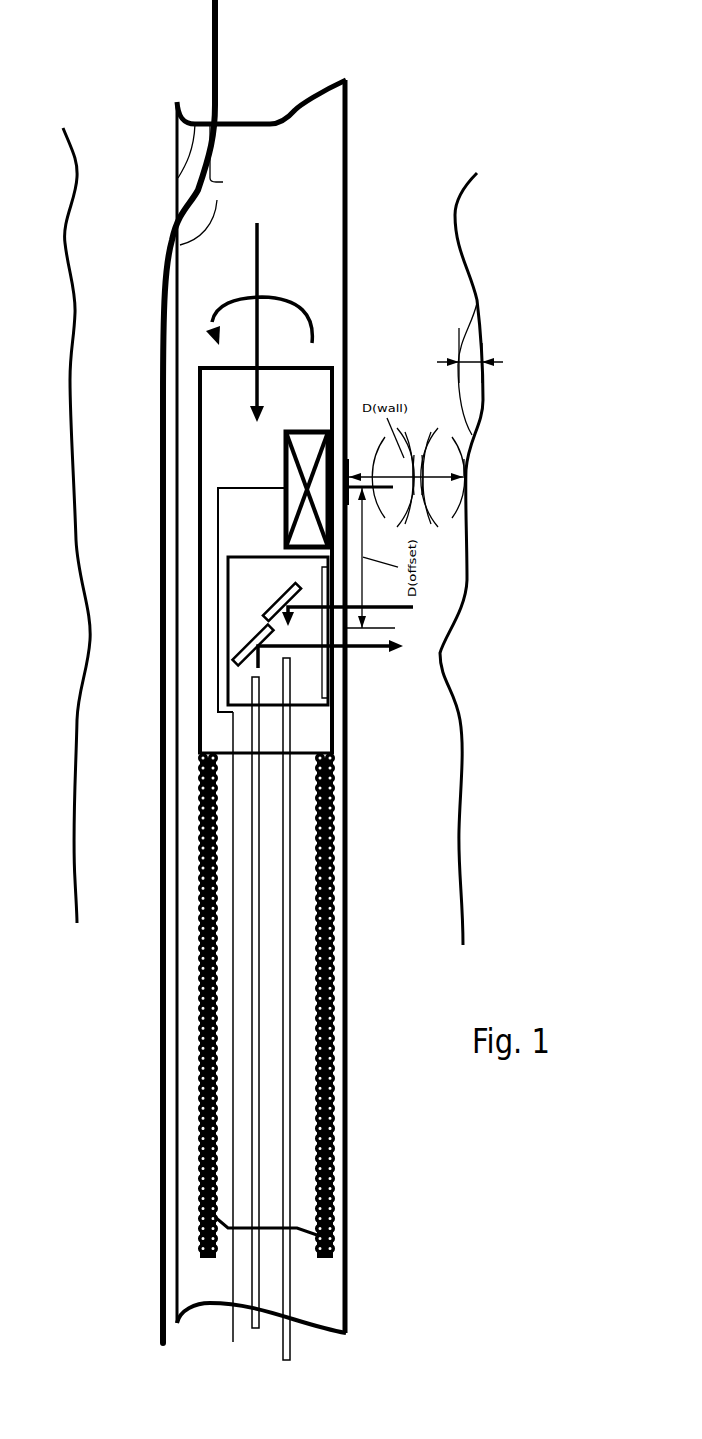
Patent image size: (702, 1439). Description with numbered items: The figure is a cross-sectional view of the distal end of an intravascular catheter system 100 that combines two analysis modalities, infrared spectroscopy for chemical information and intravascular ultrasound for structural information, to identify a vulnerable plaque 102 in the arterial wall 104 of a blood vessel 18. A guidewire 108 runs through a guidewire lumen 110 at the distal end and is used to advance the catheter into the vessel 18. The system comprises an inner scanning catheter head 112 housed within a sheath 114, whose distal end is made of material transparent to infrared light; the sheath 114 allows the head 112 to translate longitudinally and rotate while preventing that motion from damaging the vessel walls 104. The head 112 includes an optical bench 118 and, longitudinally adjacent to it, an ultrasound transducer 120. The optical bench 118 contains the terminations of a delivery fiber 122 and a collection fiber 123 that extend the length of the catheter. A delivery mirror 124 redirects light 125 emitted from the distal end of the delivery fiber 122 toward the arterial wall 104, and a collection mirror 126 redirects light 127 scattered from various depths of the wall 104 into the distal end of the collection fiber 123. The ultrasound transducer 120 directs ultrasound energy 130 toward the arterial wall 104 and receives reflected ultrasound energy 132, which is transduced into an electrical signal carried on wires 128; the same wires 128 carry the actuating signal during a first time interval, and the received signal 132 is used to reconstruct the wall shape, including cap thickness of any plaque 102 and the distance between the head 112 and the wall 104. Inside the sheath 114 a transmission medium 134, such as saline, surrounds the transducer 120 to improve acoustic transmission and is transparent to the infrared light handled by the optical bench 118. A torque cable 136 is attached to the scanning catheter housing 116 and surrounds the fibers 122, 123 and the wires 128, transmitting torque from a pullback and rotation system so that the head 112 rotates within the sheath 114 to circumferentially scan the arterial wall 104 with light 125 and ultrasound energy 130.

The blood vessel 18 is at (436, 195).
The intravascular catheter system 100 is at (306, 55).
The vulnerable plaque 102 is at (503, 362).
The arterial wall 104 is at (462, 778).
The guidewire 108 is at (212, 72).
The guidewire lumen 110 is at (210, 215).
The inner scanning catheter head 112 is at (317, 368).
The sheath 114 is at (348, 1013).
The scanning catheter housing 116 is at (332, 742).
The optical bench 118 is at (225, 690).
The ultrasound transducer 120 is at (310, 432).
The delivery fiber 122 is at (253, 985).
The collection fiber 123 is at (282, 953).
The delivery mirror 124 is at (236, 655).
The emitted light 125 is at (370, 648).
The collection mirror 126 is at (276, 605).
The scattered light 127 is at (413, 607).
The wires 128 is at (233, 1026).
The transmitted ultrasound energy 130 is at (420, 505).
The received ultrasound energy 132 is at (452, 466).
The transmission medium 134 is at (190, 408).
The torque cable 136 is at (333, 963).